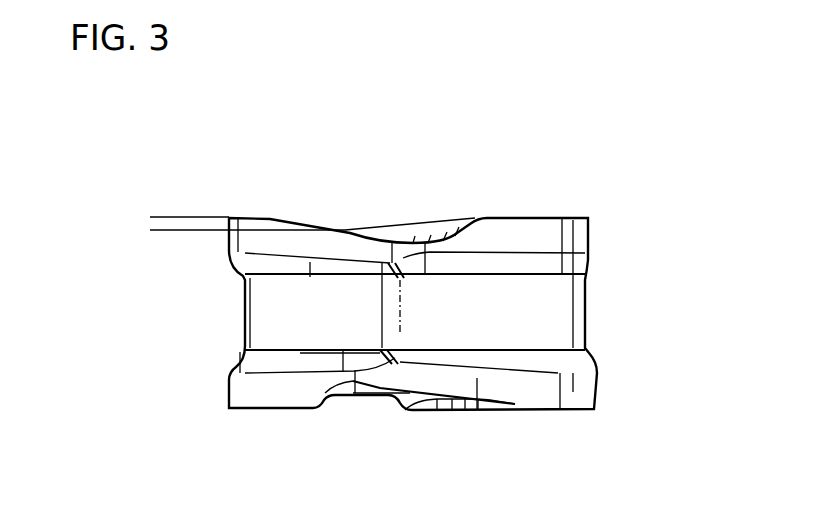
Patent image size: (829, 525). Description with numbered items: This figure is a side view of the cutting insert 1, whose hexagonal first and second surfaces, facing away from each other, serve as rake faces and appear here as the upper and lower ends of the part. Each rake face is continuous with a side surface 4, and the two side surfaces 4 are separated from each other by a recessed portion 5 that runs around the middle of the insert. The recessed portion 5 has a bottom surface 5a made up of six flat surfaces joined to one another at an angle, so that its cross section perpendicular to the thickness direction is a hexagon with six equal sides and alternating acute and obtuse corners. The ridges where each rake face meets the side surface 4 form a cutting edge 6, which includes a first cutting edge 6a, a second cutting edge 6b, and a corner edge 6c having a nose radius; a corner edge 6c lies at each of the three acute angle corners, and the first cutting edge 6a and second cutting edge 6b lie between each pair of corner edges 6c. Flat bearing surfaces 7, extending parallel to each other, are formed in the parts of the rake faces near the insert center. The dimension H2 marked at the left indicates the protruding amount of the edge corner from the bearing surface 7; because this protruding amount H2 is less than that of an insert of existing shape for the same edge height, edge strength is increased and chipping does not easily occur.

The cutting insert 1 is at (527, 207).
The side surface 4 is at (490, 233).
The recessed portion 5 is at (592, 303).
The bottom surface 5a is at (533, 322).
The cutting edge 6 is at (323, 228).
The first cutting edge 6a is at (297, 223).
The second cutting edge 6b is at (547, 217).
The corner edge 6c is at (228, 217).
The bearing surface 7 is at (403, 228).
The protruding amount H2 is at (158, 198).